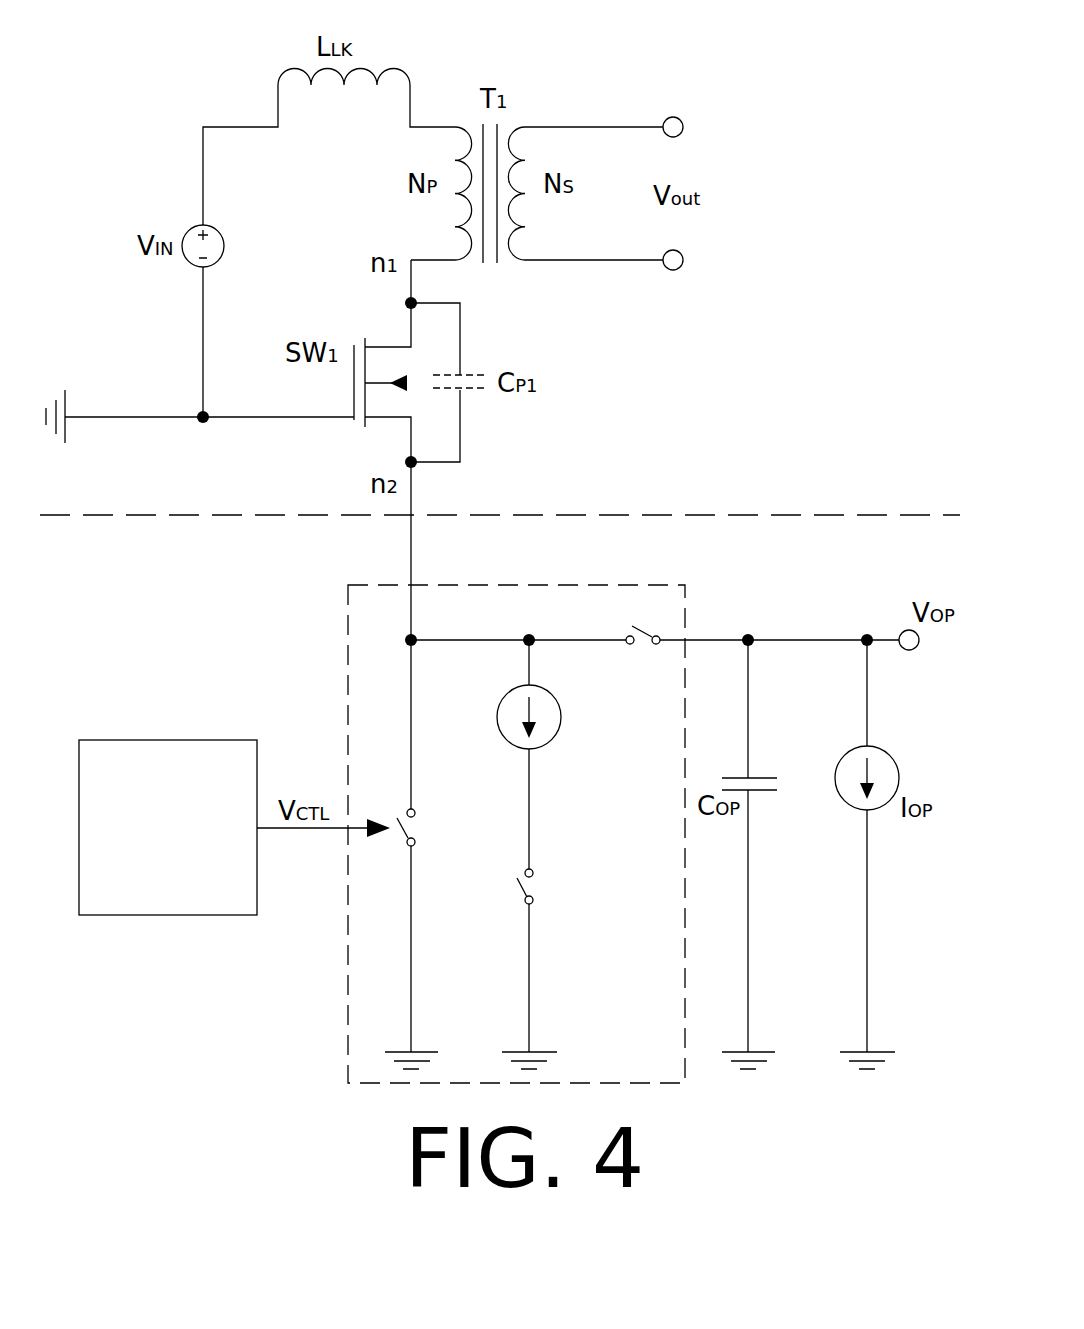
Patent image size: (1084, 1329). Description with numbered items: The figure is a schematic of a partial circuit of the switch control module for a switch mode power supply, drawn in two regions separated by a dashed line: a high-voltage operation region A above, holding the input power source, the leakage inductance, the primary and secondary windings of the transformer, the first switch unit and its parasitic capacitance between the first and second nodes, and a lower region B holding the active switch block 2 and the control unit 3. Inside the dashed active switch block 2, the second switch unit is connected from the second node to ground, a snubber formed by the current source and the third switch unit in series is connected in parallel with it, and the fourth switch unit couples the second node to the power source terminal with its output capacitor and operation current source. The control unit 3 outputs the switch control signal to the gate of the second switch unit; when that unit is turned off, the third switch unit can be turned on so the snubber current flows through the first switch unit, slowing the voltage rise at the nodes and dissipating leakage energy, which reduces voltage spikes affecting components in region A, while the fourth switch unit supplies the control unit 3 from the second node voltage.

The active switch 2 is at (686, 597).
The control unit 3 is at (100, 916).
The high-voltage operation region A is at (128, 468).
The low-voltage operation region B is at (128, 570).